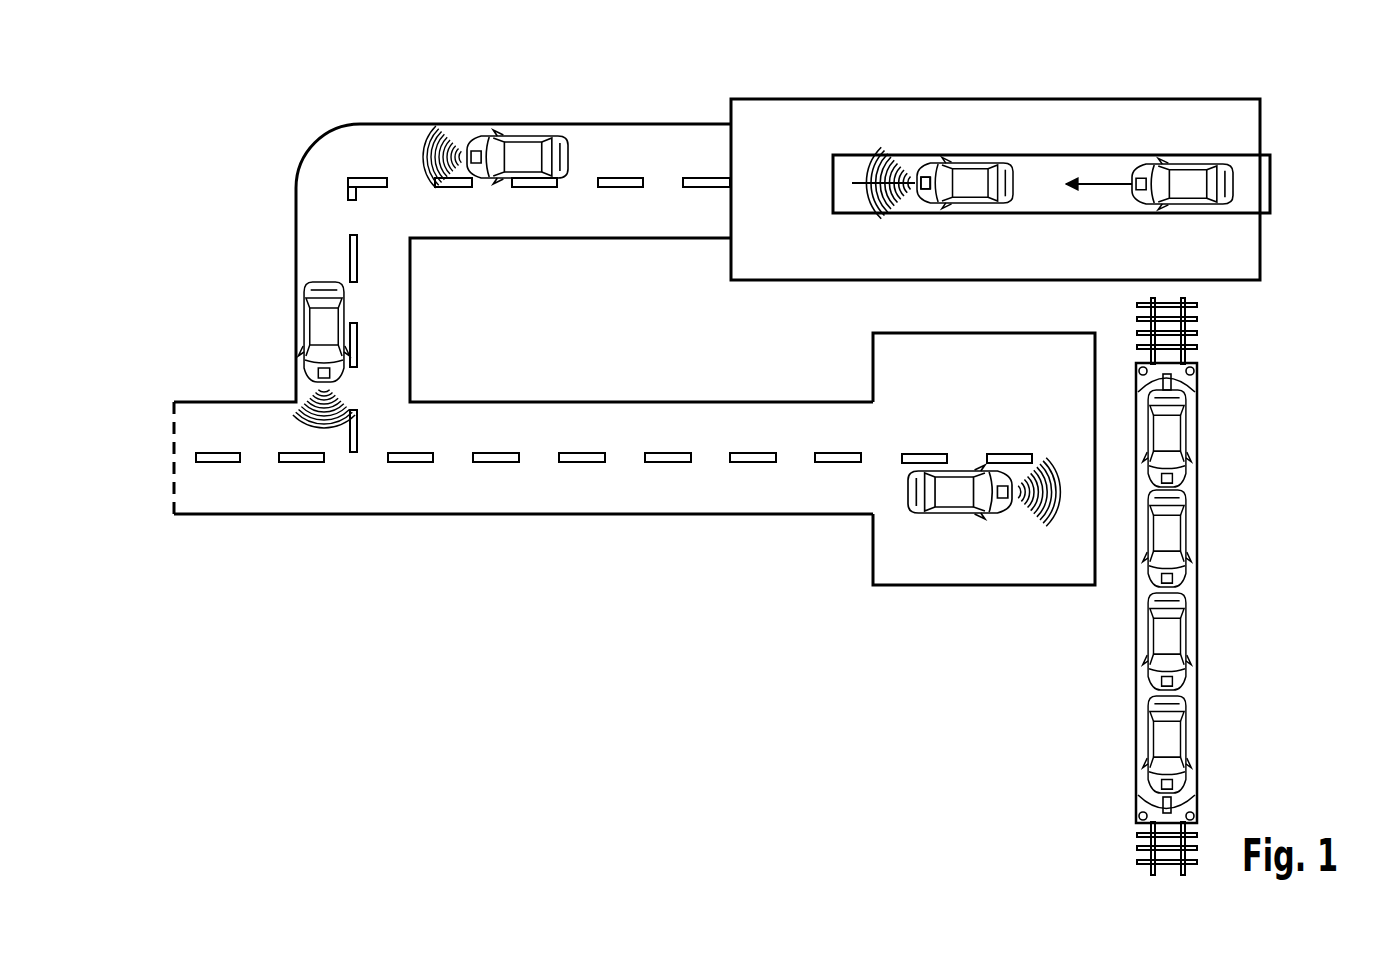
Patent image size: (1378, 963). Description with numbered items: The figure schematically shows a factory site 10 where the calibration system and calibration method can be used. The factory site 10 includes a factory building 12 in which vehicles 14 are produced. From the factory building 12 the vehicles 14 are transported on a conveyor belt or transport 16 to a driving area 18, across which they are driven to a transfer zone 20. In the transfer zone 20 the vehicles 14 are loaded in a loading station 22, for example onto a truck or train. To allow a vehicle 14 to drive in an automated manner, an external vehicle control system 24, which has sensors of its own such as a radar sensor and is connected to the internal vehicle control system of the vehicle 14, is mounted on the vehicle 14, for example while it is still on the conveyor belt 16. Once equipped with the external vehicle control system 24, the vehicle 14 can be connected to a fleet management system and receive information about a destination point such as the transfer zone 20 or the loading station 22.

The factory site 10 is at (146, 126).
The factory building 12 is at (996, 100).
The vehicle 14 is at (522, 155).
The conveyor belt or transport 16 is at (1052, 215).
The driving area 18 is at (280, 638).
The transfer zone 20 is at (810, 567).
The loading station 22 is at (1102, 617).
The external vehicle control system 24 is at (937, 172).